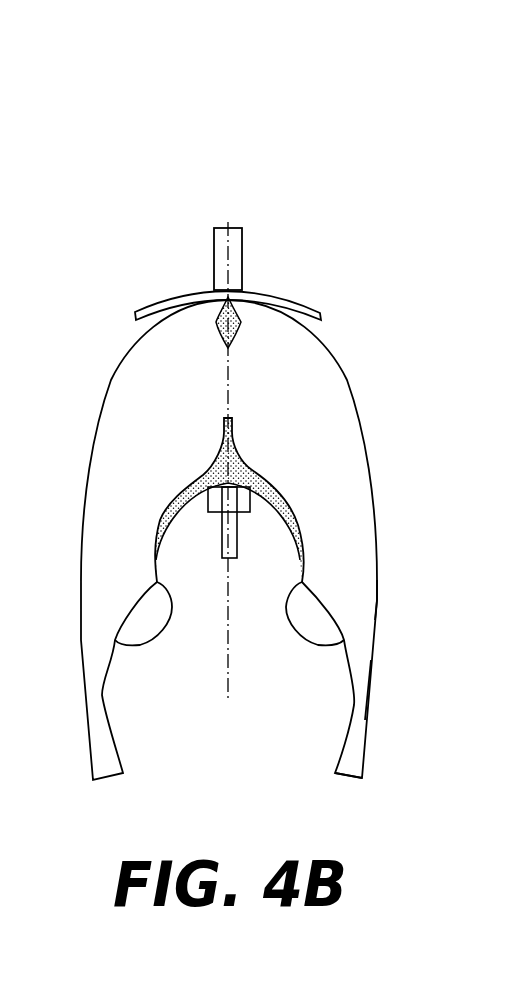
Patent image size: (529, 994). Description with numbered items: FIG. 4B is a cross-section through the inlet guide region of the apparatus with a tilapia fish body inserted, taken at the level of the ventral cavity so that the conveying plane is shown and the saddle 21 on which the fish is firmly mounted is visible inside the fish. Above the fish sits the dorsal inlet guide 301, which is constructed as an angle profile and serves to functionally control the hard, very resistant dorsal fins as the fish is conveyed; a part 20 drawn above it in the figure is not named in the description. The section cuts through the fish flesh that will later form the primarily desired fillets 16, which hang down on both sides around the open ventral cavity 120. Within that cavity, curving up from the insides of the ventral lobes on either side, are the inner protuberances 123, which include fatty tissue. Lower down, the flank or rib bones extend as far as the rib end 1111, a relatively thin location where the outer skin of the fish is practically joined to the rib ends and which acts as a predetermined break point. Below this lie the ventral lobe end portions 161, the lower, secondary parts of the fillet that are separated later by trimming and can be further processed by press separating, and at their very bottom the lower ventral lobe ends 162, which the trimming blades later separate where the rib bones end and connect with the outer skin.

The shaft 20 is at (240, 243).
The dorsal inlet guide 301 is at (280, 297).
The fillet 16 is at (332, 381).
The fish saddle 21 is at (238, 497).
The inner protuberance 123 is at (152, 637).
The ventral lobe end portion 161 is at (365, 605).
The rib end 1111 is at (365, 692).
The lower ventral lobe end 162 is at (352, 770).
The ventral cavity 120 is at (254, 769).